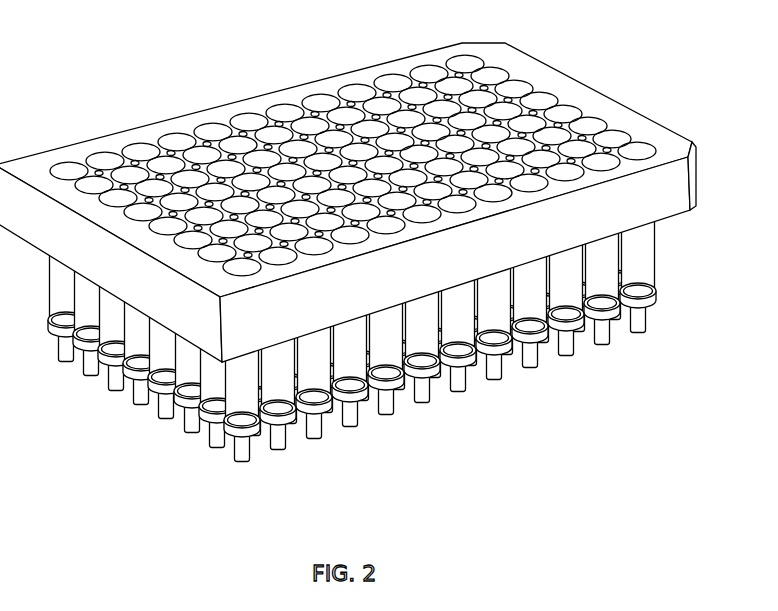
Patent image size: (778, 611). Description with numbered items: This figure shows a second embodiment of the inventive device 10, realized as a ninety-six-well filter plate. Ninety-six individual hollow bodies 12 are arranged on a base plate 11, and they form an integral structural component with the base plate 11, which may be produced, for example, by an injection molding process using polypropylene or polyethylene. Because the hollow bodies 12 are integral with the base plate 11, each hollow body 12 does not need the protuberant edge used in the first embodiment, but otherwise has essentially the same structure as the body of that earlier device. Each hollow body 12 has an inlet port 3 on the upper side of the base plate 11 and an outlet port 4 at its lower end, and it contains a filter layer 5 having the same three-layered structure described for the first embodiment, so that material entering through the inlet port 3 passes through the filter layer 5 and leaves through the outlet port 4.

The device 10 is at (351, 273).
The base plate 11 is at (461, 270).
The inlet port 3 is at (240, 268).
The hollow body 12 is at (236, 394).
The filter layer 5 is at (240, 428).
The outlet port 4 is at (241, 466).